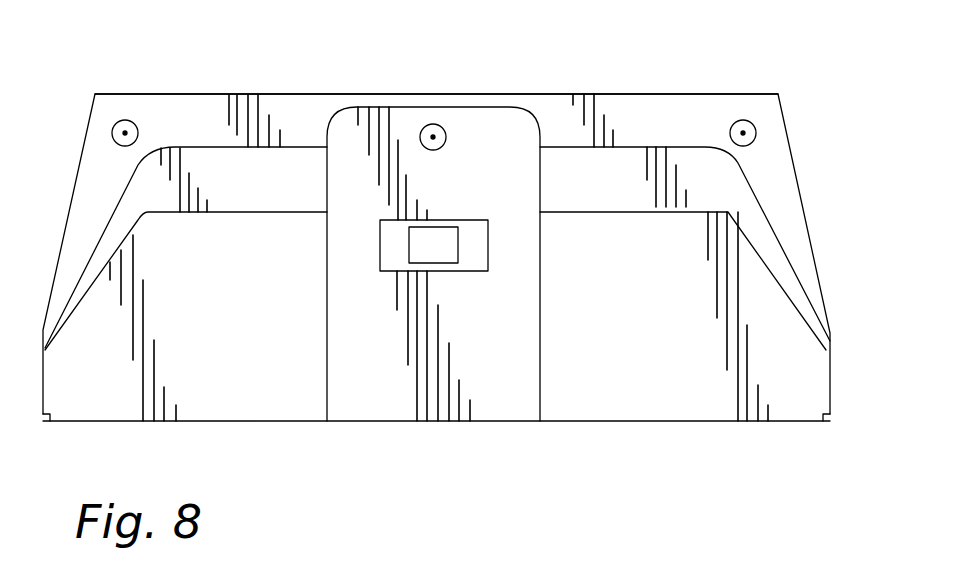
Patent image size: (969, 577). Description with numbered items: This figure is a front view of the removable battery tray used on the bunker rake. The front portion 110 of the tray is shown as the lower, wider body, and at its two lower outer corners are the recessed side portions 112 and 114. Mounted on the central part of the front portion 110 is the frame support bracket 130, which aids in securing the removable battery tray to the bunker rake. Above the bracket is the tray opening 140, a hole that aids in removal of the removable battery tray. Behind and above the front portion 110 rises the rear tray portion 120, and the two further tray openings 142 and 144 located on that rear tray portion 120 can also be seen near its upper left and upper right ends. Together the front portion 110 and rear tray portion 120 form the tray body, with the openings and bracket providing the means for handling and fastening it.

The front portion 110 is at (488, 411).
The recessed side portion 112 is at (822, 398).
The recessed side portion 114 is at (43, 416).
The rear tray portion 120 is at (410, 98).
The frame support bracket 130 is at (440, 250).
The tray opening 140 is at (433, 137).
The tray opening 142 is at (125, 133).
The tray opening 144 is at (743, 133).